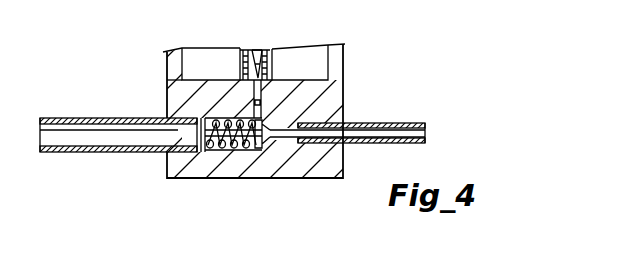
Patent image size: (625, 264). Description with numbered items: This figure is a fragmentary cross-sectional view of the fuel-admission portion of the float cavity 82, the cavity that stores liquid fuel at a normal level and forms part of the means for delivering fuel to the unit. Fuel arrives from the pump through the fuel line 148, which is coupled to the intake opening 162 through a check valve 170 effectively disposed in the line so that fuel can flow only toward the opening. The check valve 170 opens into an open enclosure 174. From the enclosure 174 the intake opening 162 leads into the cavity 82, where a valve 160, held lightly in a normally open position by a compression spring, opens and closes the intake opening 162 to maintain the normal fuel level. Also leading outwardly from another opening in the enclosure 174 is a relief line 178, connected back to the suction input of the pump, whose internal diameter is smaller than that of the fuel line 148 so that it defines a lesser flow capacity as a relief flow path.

The float cavity 82 is at (326, 68).
The fuel line 148 is at (103, 117).
The valve 160 is at (258, 57).
The intake opening 162 is at (245, 82).
The check valve 170 is at (200, 156).
The open enclosure 174 is at (236, 152).
The relief line 178 is at (385, 121).